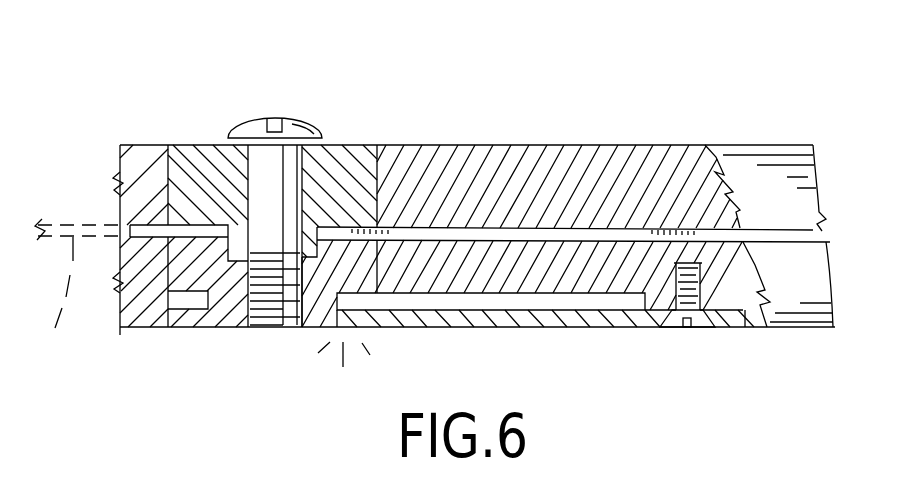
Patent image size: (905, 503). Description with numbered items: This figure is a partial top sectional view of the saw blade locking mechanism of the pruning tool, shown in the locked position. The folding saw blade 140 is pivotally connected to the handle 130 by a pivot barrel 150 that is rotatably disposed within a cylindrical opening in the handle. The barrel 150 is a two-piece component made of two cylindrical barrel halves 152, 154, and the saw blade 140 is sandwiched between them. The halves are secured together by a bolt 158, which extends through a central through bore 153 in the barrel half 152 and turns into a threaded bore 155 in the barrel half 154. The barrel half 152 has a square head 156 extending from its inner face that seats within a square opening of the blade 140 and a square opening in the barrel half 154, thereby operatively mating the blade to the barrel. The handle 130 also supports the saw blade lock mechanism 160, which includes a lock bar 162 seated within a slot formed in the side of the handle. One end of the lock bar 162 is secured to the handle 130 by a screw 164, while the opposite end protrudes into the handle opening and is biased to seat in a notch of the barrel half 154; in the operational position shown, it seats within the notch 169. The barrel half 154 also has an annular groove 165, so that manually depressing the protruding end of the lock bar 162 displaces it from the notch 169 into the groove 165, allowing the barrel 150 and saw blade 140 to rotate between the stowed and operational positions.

The handle 130 is at (644, 145).
The folding saw blade 140 is at (76, 296).
The pivot barrel 150 is at (195, 140).
The barrel half 152 is at (363, 145).
The central through bore 153 is at (272, 147).
The barrel half 154 is at (318, 312).
The threaded bore 155 is at (252, 297).
The square head 156 is at (325, 252).
The bolt 158 is at (253, 132).
The saw blade lock mechanism 160 is at (618, 334).
The lock bar 162 is at (500, 328).
The screw 164 is at (698, 325).
The annular groove 165 is at (197, 309).
The notch 169 is at (382, 317).